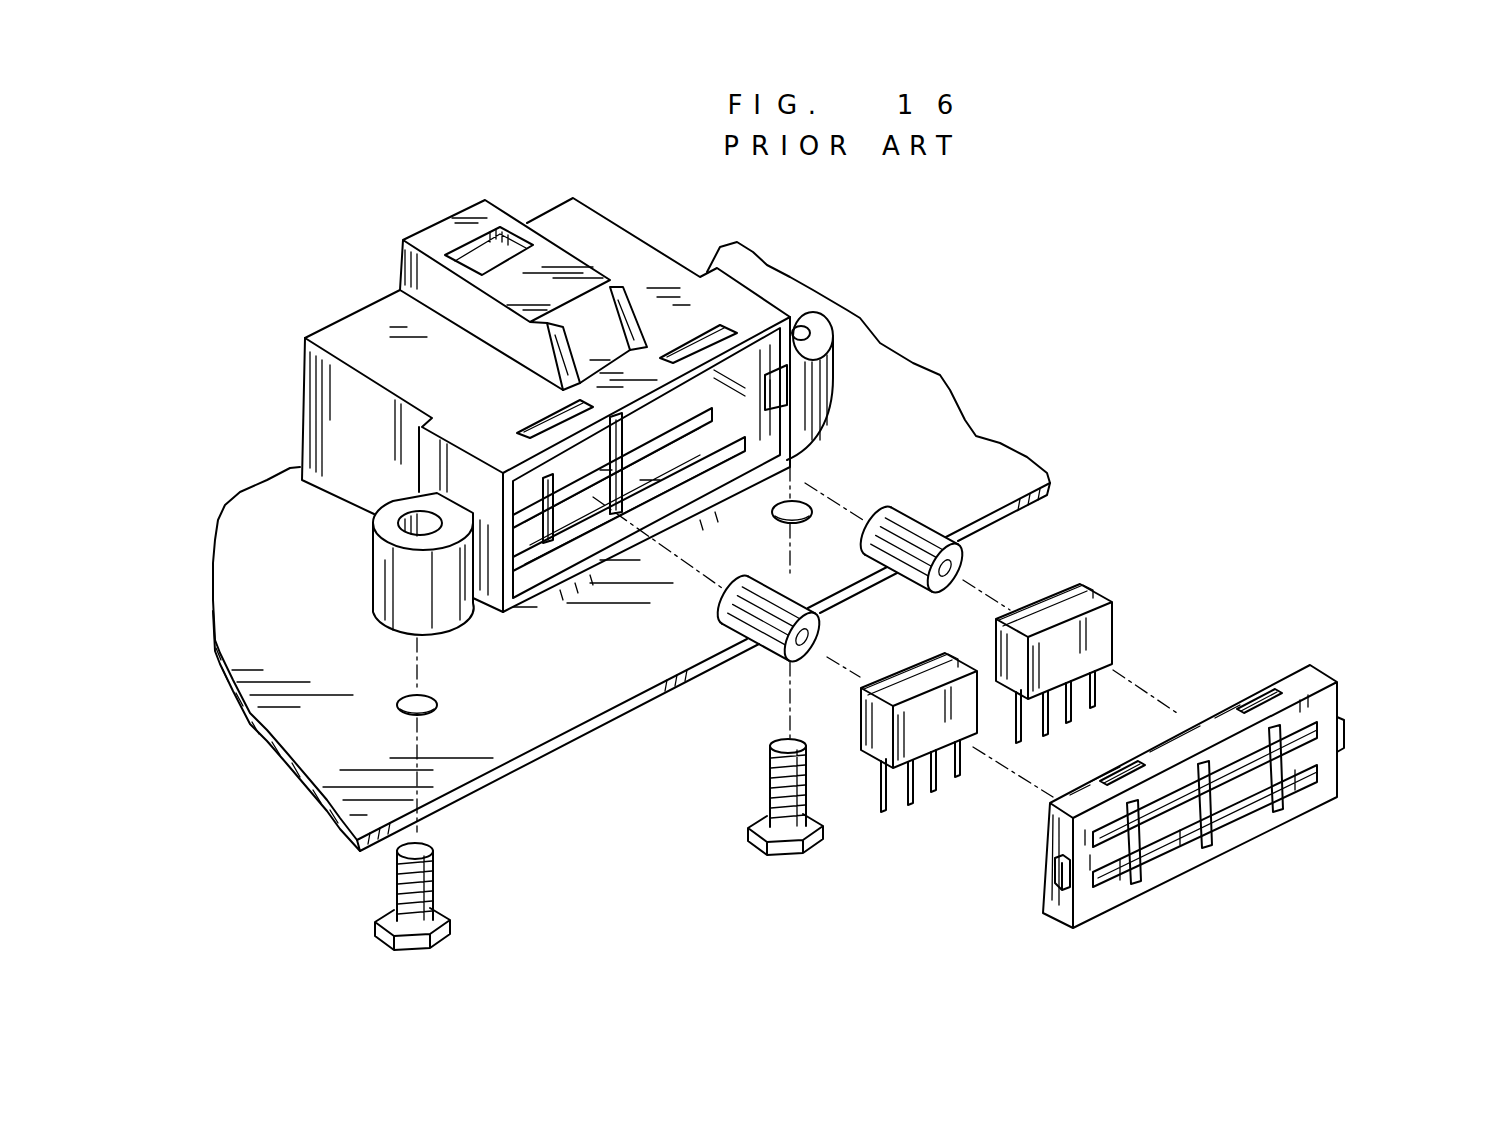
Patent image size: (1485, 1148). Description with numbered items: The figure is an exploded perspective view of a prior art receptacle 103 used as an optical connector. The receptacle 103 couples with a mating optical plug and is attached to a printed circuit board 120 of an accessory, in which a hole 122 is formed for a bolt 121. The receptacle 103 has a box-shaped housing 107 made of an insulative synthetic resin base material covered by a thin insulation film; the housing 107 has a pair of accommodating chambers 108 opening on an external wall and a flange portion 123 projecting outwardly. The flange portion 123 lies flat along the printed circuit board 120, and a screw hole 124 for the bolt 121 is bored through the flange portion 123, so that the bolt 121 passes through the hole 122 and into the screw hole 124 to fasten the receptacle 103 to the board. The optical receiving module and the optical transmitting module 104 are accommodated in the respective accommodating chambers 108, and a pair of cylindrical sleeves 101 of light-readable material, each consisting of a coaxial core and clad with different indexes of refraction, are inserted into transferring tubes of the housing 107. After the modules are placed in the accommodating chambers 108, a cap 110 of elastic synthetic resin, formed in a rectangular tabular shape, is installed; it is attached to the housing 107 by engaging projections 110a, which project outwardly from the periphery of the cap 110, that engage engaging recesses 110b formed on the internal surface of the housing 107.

The sleeve 101 is at (762, 655).
The receptacle 103 is at (803, 247).
The optical transmitting module 104 is at (857, 747).
The housing 107 is at (660, 247).
The accommodating chamber 108 is at (540, 548).
The cap 110 is at (1243, 827).
The engaging projection 110a is at (1055, 877).
The engaging recess 110b is at (505, 600).
The printed circuit board 120 is at (960, 427).
The bolt 121 is at (433, 880).
The hole 122 is at (433, 713).
The flange portion 123 is at (385, 568).
The screw hole 124 is at (378, 510).